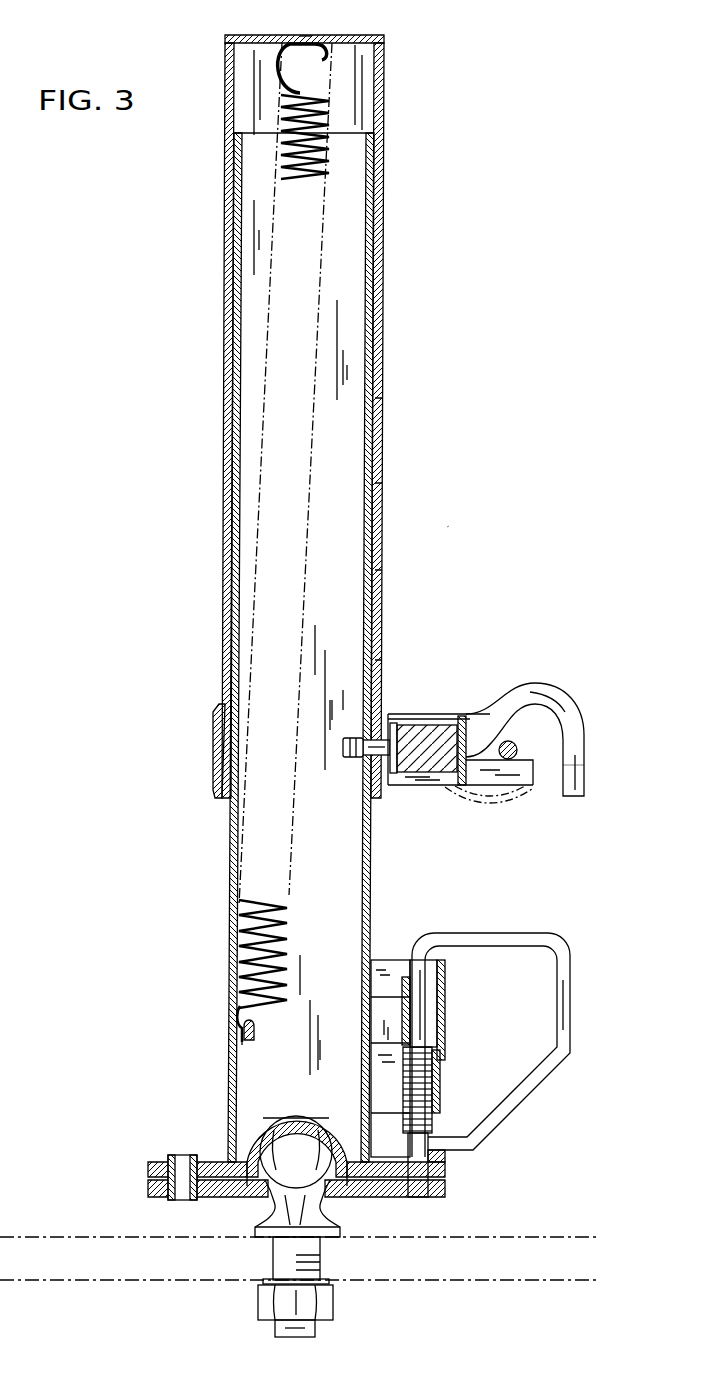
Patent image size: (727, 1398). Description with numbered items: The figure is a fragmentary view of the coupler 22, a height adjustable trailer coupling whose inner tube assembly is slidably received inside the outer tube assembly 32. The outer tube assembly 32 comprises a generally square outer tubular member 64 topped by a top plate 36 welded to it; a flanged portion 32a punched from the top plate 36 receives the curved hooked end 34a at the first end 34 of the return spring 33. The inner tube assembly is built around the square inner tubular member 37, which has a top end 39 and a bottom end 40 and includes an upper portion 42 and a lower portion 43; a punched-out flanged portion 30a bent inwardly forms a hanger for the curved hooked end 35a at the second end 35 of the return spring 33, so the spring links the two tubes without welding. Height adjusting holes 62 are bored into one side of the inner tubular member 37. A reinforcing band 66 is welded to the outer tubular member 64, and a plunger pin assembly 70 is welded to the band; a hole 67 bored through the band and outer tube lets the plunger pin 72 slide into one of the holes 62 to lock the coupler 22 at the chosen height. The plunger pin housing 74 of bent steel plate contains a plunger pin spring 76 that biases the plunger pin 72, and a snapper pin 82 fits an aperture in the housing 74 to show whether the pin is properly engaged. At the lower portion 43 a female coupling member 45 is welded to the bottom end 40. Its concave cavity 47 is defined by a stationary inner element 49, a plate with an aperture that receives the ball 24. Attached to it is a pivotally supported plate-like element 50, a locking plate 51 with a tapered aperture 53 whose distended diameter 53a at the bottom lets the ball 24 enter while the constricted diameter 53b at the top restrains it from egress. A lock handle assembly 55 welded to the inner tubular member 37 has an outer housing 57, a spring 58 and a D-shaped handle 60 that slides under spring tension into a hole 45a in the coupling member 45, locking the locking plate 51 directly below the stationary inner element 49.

The coupler 22 is at (450, 527).
The ball 24 is at (308, 1215).
The flanged portion 30a is at (247, 1035).
The outer tube assembly 32 is at (309, 401).
The flanged portion 32a is at (305, 38).
The return spring 33 is at (203, 972).
The first end 34 is at (307, 111).
The curved hooked end 34a is at (324, 60).
The second end 35 is at (232, 1003).
The curved hooked end 35a is at (238, 1025).
The top plate 36 is at (240, 35).
The inner tubular member 37 is at (372, 820).
The top end 39 is at (347, 133).
The bottom end 40 is at (235, 1162).
The upper portion 42 is at (380, 235).
The lower portion 43 is at (289, 602).
The female coupling member 45 is at (361, 1150).
The hole 45a is at (425, 1190).
The concave cavity 47 is at (298, 1095).
The stationary inner element 49 is at (450, 1168).
The plate-like element 50 is at (445, 1187).
The locking plate 51 is at (372, 1192).
The aperture 53 is at (345, 1205).
The distended diameter 53a is at (238, 1197).
The constricted diameter 53b is at (255, 1192).
The lock handle assembly 55 is at (527, 1047).
The outer housing 57 is at (390, 960).
The spring 58 is at (437, 1088).
The D-shaped handle 60 is at (560, 1042).
The height adjusting holes 62 is at (376, 483).
The outer tubular member 64 is at (228, 228).
The reinforcing band 66 is at (215, 750).
The hole 67 is at (393, 718).
The plunger pin assembly 70 is at (552, 720).
The plunger pin 72 is at (575, 763).
The plunger pin housing 74 is at (528, 787).
The plunger pin spring 76 is at (490, 747).
The snapper pin 82 is at (508, 760).